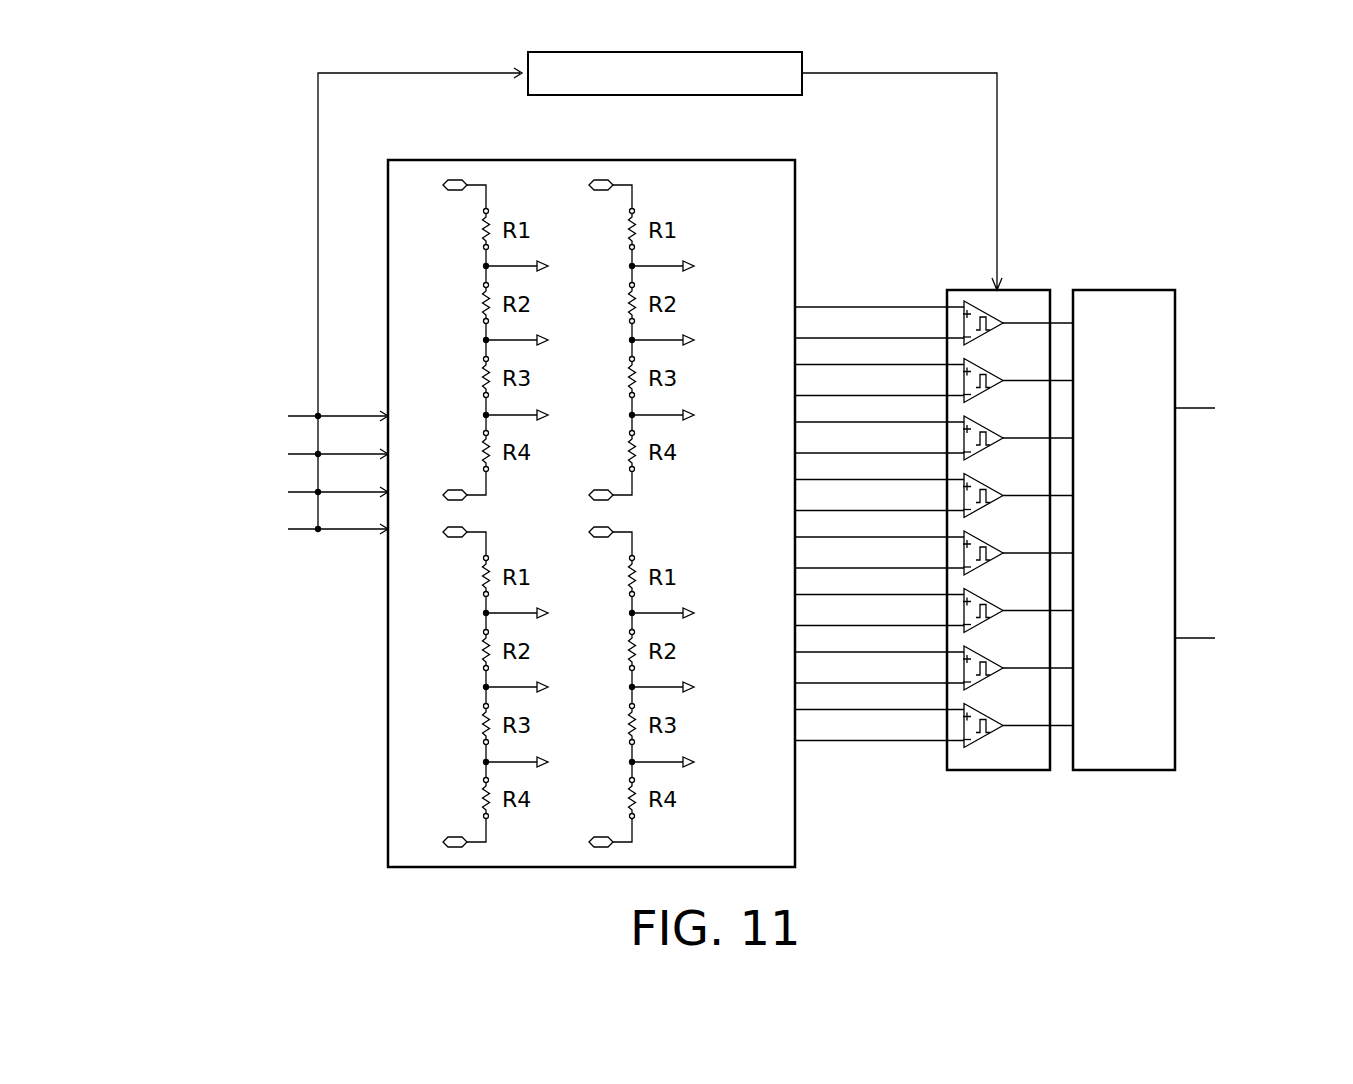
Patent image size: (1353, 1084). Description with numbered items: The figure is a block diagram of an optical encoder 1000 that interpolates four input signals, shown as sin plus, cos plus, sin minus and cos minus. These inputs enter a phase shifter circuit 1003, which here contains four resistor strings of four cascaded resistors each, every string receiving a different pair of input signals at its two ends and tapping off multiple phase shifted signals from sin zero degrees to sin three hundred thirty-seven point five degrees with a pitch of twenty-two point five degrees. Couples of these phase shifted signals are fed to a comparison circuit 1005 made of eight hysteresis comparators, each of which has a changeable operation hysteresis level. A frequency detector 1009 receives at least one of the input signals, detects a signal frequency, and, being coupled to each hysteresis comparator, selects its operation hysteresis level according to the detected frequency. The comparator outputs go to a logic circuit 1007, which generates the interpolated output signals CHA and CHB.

The optical encoder 1000 is at (185, 190).
The phase shifter circuit 1003 is at (387, 688).
The comparison circuit 1005 is at (990, 770).
The logic circuit 1007 is at (1125, 290).
The frequency detector 1009 is at (528, 86).